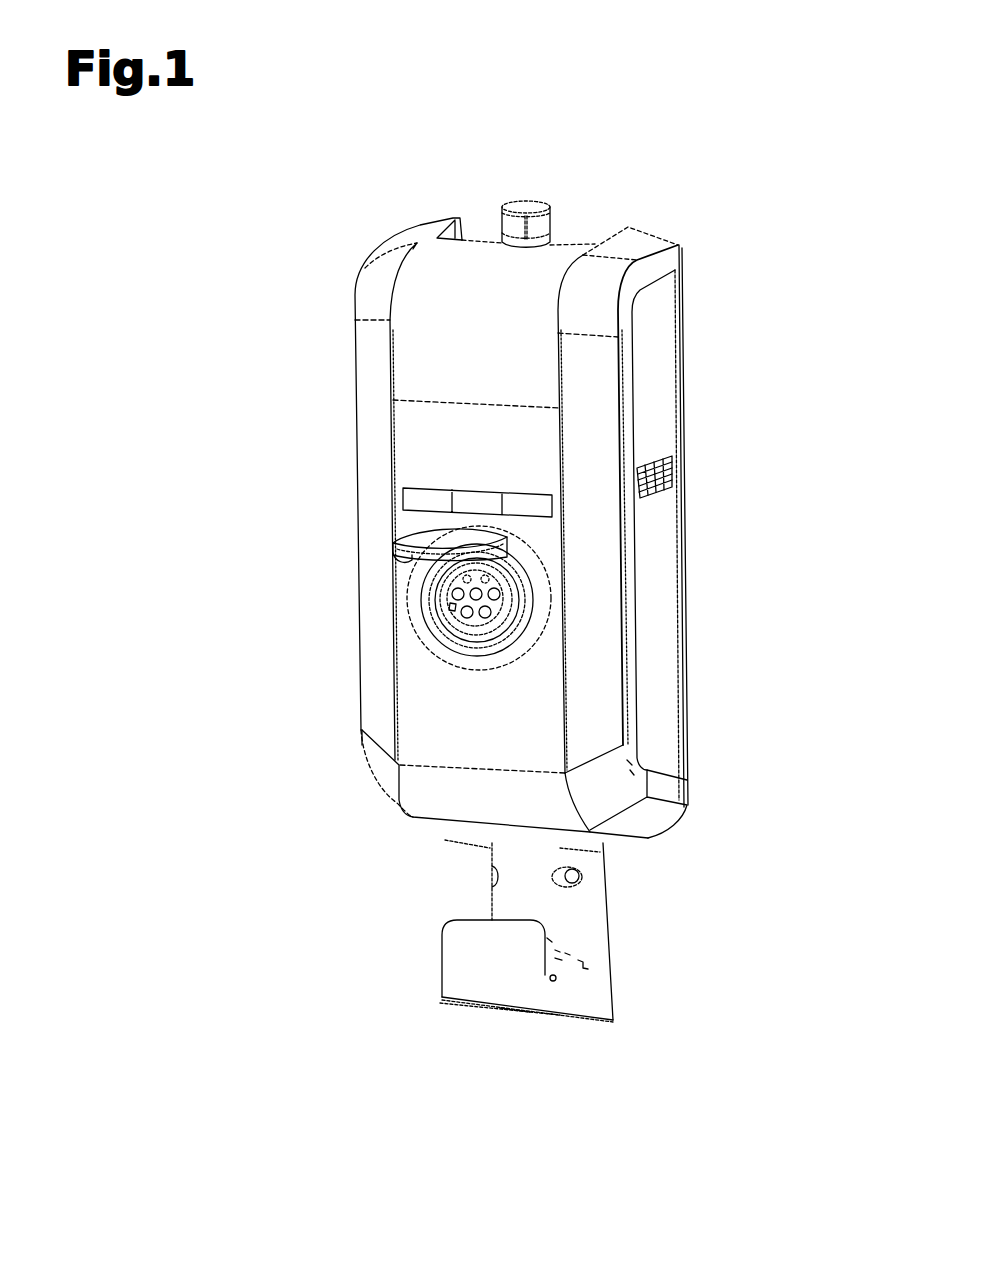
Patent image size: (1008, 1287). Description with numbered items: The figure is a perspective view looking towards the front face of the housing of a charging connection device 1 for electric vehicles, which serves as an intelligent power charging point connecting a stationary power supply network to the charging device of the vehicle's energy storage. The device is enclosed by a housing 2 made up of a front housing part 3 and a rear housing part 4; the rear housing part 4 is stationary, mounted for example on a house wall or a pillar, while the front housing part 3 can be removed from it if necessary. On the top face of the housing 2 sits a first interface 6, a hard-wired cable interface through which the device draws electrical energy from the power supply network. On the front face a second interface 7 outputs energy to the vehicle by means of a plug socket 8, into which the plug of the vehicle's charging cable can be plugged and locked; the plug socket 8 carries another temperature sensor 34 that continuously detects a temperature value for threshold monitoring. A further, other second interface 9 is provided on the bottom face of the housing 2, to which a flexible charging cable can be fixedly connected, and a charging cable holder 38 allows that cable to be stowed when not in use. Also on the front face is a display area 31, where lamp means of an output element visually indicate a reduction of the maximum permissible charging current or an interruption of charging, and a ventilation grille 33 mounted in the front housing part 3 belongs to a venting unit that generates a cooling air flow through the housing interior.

The charging connection device 1 is at (718, 78).
The housing 2 is at (400, 165).
The front housing part 3 is at (373, 827).
The rear housing part 4 is at (678, 353).
The first interface 6 is at (562, 208).
The second interface 7 is at (422, 605).
The plug socket 8 is at (503, 612).
The other second interface 9 is at (552, 1022).
The display area 31 is at (550, 522).
The ventilation grille 33 is at (692, 465).
The other temperature sensor 34 is at (447, 605).
The charging cable holder 38 is at (485, 968).